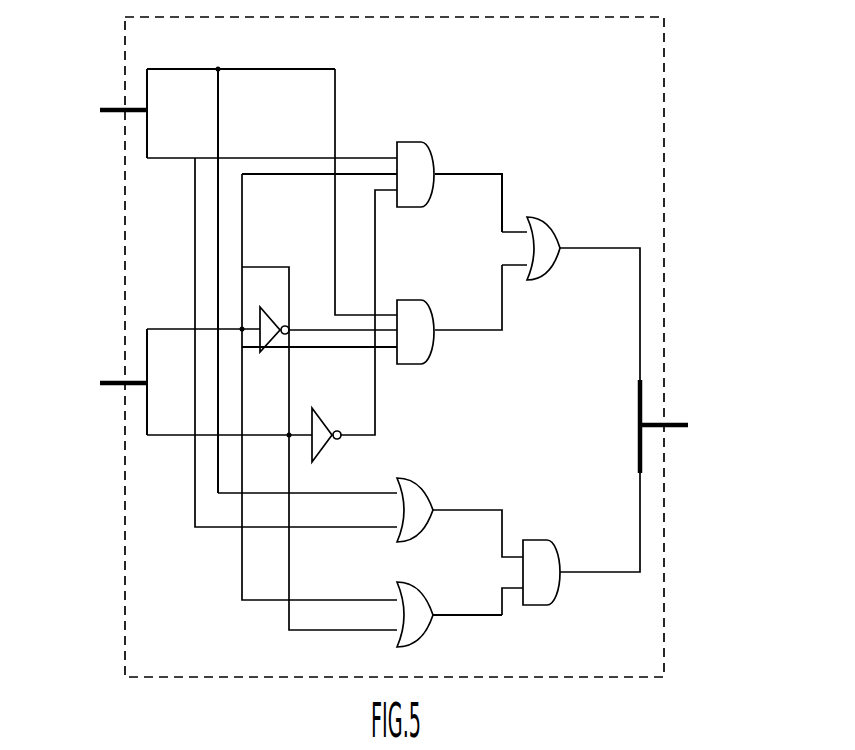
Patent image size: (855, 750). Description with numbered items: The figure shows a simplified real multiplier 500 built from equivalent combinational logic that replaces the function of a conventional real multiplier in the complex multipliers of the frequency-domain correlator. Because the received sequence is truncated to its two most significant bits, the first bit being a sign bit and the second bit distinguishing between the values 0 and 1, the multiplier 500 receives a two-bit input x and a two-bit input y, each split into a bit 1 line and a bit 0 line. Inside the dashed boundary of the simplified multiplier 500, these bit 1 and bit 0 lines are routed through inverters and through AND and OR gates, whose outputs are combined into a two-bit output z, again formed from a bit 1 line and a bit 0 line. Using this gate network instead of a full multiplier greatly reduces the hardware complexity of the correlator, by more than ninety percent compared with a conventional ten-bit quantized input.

The simplified multiplier 500 is at (408, 347).
The bit 1 signal line 1 is at (272, 175).
The bit 0 signal line 0 is at (272, 323).